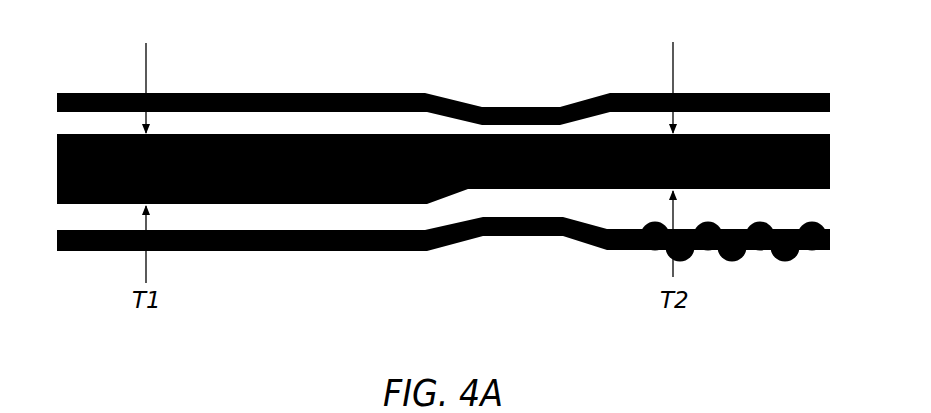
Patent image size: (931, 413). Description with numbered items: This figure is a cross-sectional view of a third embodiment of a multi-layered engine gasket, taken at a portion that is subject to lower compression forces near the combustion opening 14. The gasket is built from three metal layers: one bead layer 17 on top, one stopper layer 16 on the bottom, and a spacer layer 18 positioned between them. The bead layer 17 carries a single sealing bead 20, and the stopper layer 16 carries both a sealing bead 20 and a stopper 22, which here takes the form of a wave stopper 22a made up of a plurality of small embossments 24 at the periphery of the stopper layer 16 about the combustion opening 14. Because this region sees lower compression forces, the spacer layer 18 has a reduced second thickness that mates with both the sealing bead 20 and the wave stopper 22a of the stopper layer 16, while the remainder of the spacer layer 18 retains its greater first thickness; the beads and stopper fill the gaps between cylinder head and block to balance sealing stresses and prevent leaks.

The combustion opening 14 is at (451, 167).
The stopper layer 16 is at (57, 243).
The bead layer 17 is at (57, 97).
The spacer layer 18 is at (57, 172).
The sealing bead 20 is at (512, 105).
The stopper 22 is at (763, 255).
The wave stopper 22a is at (830, 240).
The small embossments 24 is at (732, 261).